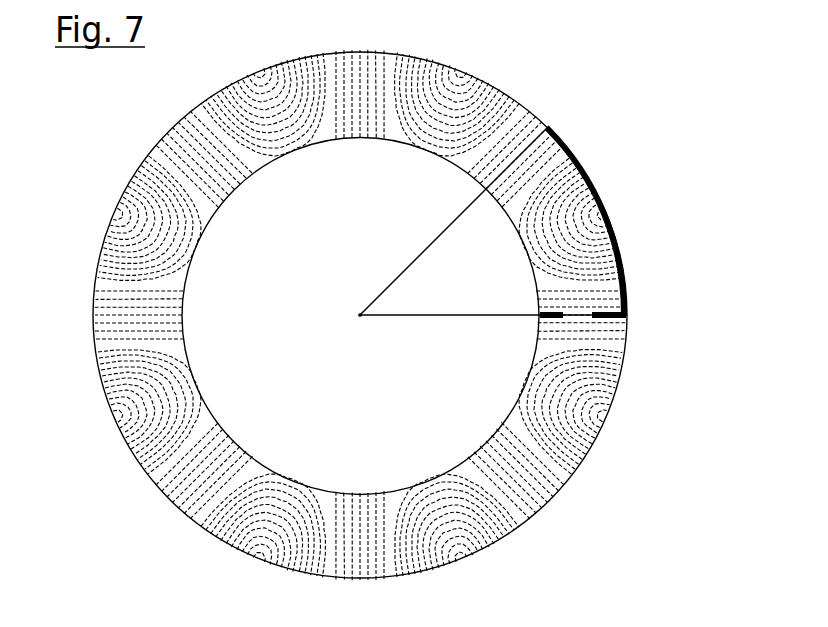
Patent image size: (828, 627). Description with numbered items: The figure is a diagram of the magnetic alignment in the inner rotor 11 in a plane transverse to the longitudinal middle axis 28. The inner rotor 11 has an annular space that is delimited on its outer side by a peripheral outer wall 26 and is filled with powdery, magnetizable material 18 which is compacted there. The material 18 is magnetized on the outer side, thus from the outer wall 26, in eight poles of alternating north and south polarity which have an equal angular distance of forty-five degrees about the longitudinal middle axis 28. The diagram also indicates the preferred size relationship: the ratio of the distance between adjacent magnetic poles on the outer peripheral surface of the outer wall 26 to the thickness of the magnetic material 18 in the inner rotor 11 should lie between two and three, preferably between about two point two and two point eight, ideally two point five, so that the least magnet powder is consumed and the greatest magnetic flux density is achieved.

The inner rotor 11 is at (367, 313).
The magnetizable material 18 is at (570, 457).
The outer wall 26 is at (609, 413).
The longitudinal middle axis 28 is at (360, 317).